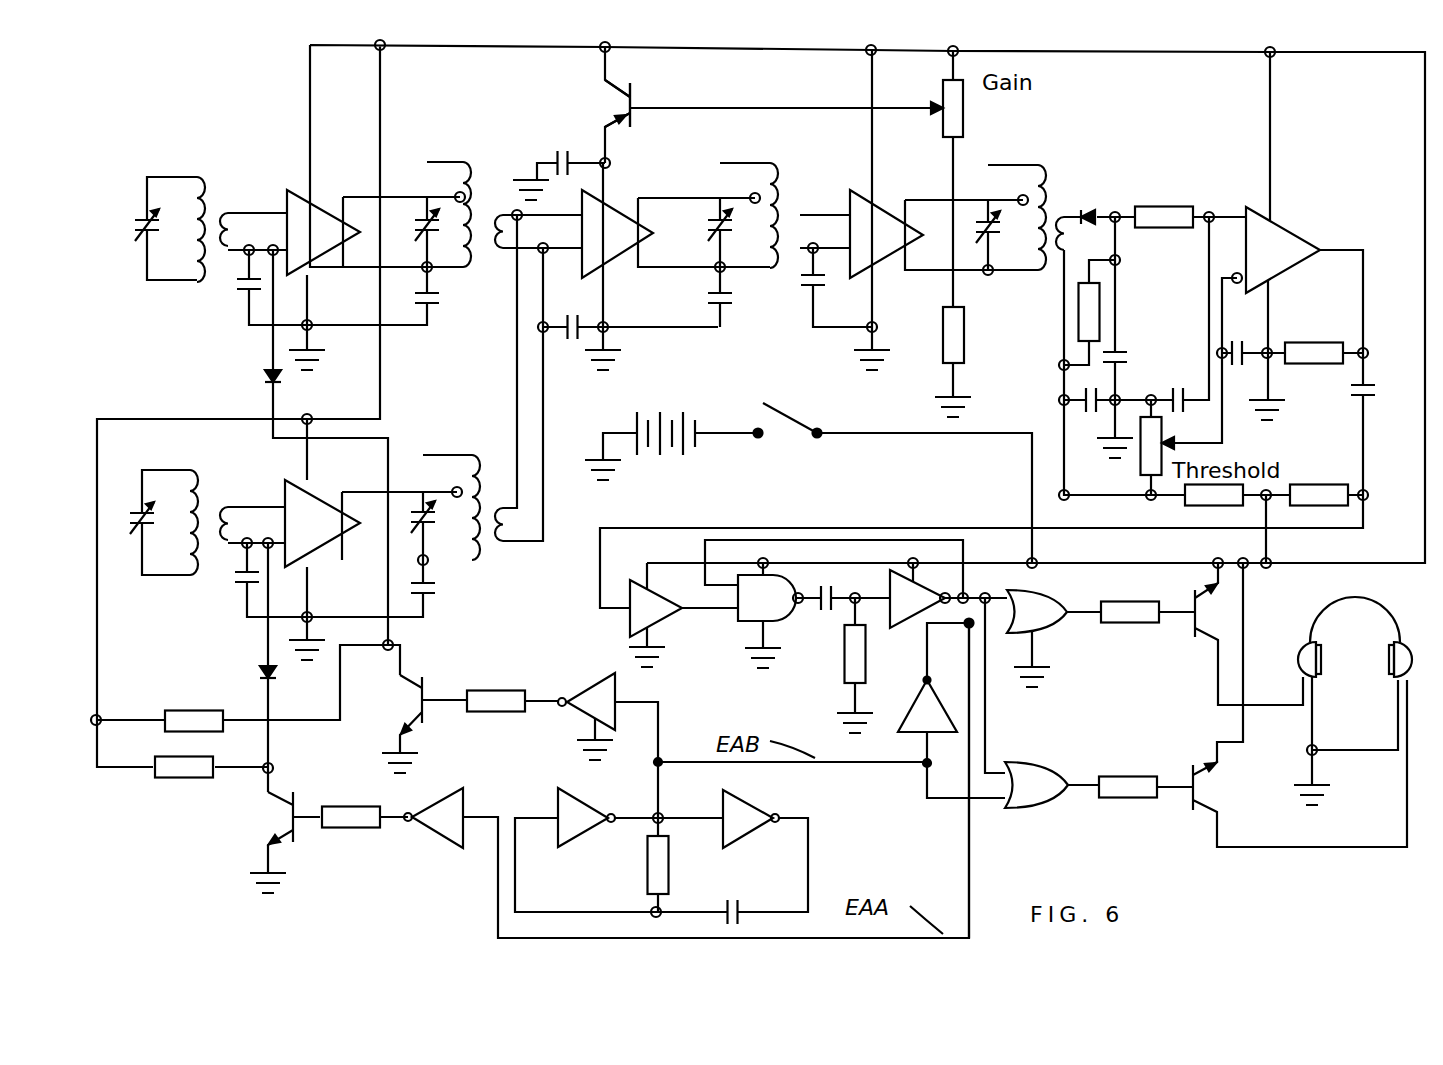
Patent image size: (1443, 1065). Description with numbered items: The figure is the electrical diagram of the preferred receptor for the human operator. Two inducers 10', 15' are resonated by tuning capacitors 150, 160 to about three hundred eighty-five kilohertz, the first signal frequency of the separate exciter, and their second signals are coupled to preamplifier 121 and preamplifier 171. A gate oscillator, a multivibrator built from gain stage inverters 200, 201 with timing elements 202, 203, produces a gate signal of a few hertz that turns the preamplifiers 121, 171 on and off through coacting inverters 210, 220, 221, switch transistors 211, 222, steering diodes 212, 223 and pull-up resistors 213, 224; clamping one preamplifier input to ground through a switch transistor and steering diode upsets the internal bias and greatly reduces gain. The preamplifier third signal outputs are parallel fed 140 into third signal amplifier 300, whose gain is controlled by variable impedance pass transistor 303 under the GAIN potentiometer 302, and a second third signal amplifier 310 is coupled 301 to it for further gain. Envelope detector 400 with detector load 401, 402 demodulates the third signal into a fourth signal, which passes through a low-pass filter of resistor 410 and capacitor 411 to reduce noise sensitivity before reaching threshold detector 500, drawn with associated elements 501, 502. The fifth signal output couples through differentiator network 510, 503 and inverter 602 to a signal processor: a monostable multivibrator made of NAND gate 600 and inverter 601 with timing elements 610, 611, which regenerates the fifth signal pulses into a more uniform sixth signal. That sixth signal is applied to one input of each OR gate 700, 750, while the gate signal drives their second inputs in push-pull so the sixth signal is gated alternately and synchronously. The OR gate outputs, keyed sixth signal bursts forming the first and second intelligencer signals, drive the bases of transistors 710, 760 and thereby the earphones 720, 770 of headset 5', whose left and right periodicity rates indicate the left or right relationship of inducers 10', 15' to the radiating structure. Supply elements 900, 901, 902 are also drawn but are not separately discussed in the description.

The tuning capacitor 150 is at (145, 212).
The inducer 10' is at (214, 188).
The preamplifier 121 is at (297, 206).
The steering diode 212 is at (262, 378).
The parallel feed coupling 140 is at (500, 258).
The variable impedance pass transistor 303 is at (637, 99).
The third signal amplifier 300 is at (601, 216).
The coupling 301 is at (776, 196).
The second third signal amplifier 310 is at (871, 213).
The GAIN potentiometer 302 is at (958, 98).
The envelope detector 400 is at (1098, 210).
The resistor 410 is at (1171, 215).
The detector load 401 is at (1080, 313).
The detector load 402 is at (1128, 356).
The capacitor 411 is at (1170, 392).
The threshold detector 500 is at (1274, 247).
The differentiator network element 510 is at (1355, 402).
The threshold potentiometer 501 is at (1140, 460).
The resistor 502 is at (1215, 500).
The differentiator network element 503 is at (1316, 492).
The battery 900 is at (643, 414).
The switch 901 is at (805, 420).
The power supply line 902 is at (932, 443).
The tuning capacitor 160 is at (128, 500).
The inducer 15' is at (231, 503).
The preamplifier 171 is at (303, 508).
The steering diode 223 is at (282, 672).
The pull-up resistor 213 is at (188, 717).
The pull-up resistor 224 is at (188, 778).
The switch transistor 211 is at (433, 686).
The inverter 210 is at (600, 697).
The switch transistor 222 is at (304, 796).
The inverter 221 is at (448, 806).
The inverter 200 is at (570, 810).
The inverter 201 is at (746, 814).
The timing element 202 is at (645, 880).
The timing element 203 is at (739, 906).
The inverter 220 is at (905, 727).
The inverter 602 is at (632, 602).
The NAND gate 600 is at (750, 598).
The timing element 611 is at (817, 592).
The timing element 610 is at (848, 662).
The inverter 601 is at (916, 608).
The OR gate 700 is at (1036, 609).
The OR gate 750 is at (1040, 776).
The transistor 710 is at (1190, 632).
The transistor 760 is at (1186, 770).
The headset 5' is at (1364, 613).
The earphone 720 is at (1290, 668).
The earphone 770 is at (1388, 672).